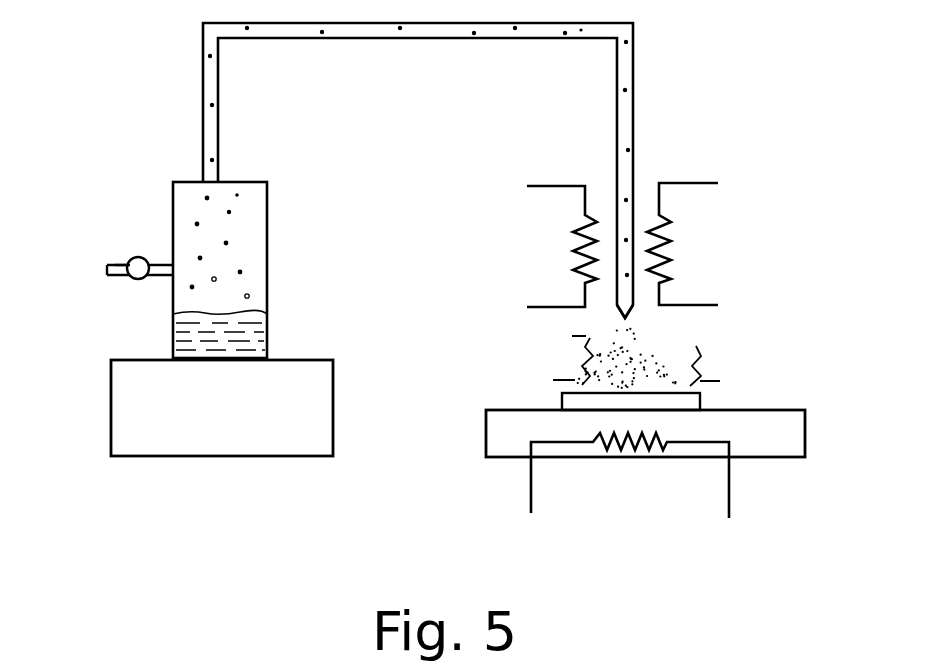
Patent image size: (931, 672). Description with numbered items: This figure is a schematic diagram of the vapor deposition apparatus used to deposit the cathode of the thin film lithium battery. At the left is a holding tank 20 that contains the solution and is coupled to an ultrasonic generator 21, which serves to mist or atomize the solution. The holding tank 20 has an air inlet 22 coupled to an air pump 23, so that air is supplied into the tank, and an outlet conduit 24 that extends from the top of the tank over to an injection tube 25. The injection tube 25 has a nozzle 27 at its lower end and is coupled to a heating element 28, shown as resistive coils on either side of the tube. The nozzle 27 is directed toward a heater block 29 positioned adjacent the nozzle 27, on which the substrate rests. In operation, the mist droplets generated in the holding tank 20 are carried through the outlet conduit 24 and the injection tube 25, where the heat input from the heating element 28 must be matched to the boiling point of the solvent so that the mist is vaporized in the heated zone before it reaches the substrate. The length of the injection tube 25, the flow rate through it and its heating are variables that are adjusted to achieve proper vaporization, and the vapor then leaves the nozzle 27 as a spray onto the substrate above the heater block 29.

The holding tank 20 is at (267, 212).
The ultrasonic generator 21 is at (333, 383).
The air inlet 22 is at (163, 262).
The air pump 23 is at (131, 280).
The outlet conduit 24 is at (218, 117).
The injection tube 25 is at (620, 298).
The nozzle 27 is at (633, 312).
The heating element 28 is at (665, 240).
The heater block 29 is at (773, 450).